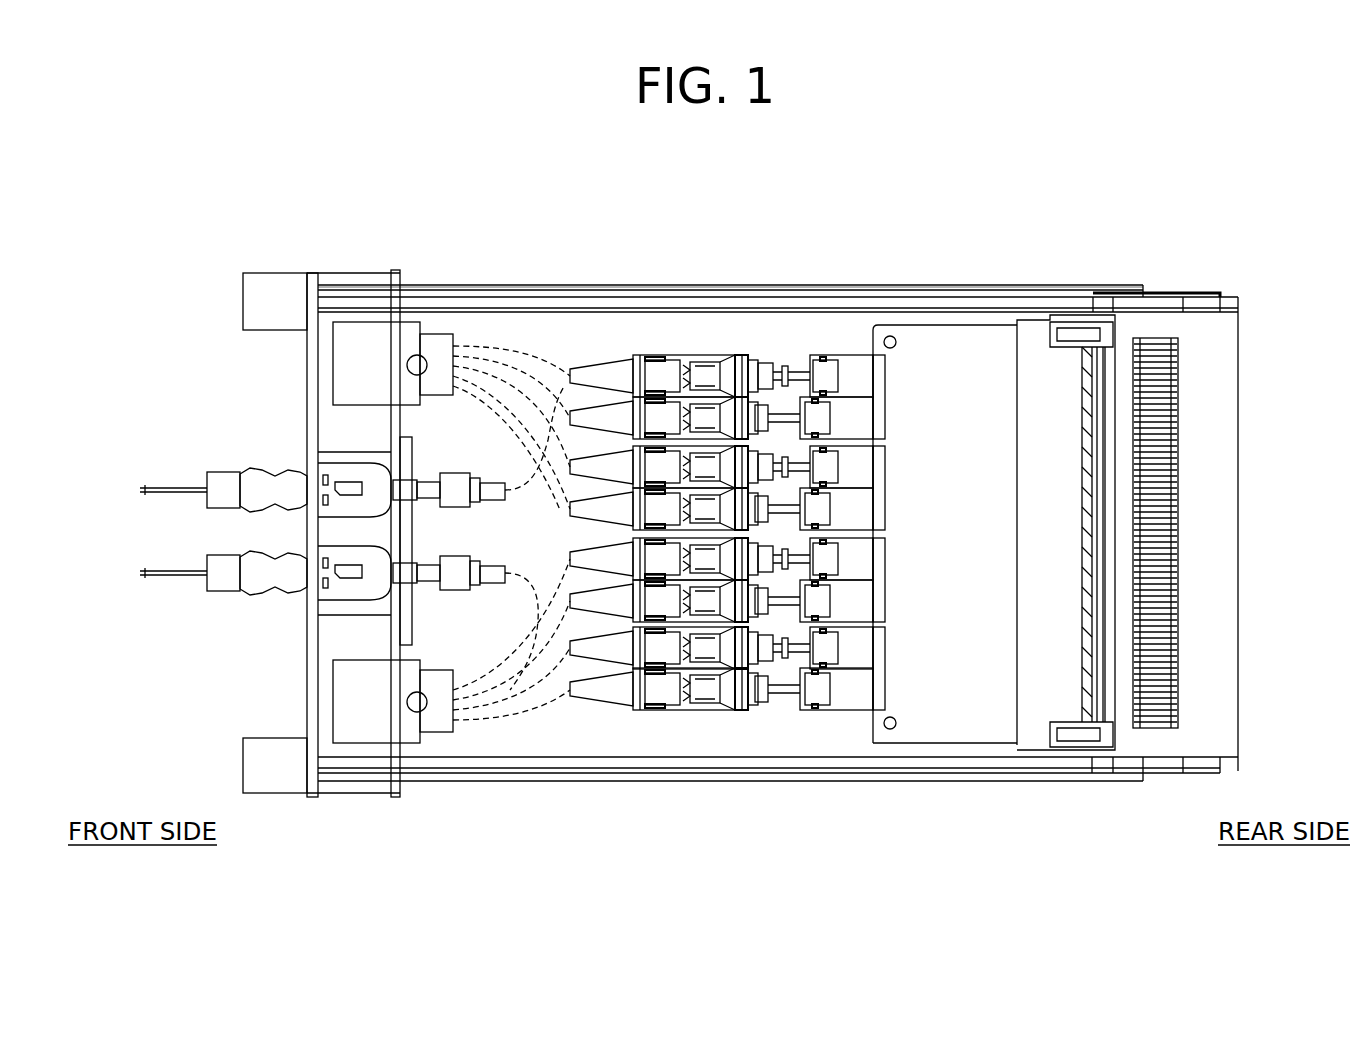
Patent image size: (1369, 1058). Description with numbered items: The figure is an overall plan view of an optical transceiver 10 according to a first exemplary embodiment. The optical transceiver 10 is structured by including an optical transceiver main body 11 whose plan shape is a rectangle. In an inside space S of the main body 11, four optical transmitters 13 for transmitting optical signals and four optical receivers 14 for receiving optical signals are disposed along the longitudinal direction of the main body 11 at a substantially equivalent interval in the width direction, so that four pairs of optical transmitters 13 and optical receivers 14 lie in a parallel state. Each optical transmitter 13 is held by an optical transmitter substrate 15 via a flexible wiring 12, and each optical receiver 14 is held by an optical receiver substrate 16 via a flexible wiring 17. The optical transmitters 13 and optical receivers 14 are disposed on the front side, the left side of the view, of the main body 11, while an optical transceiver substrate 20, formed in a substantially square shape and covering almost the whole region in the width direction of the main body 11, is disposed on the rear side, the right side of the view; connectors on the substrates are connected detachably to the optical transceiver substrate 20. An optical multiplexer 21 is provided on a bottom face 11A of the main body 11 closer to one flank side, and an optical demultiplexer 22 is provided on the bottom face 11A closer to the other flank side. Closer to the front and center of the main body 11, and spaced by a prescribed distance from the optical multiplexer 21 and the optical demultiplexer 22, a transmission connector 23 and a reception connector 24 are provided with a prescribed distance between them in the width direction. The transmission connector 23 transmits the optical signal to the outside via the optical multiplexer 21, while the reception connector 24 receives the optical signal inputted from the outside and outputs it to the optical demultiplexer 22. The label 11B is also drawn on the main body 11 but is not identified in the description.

The optical transceiver 10 is at (1133, 228).
The optical transceiver main body 11 is at (967, 285).
The bottom face 11A is at (512, 335).
The front panel 11B is at (307, 673).
The flexible wiring 12 is at (754, 357).
The optical transmitter 13 is at (618, 378).
The optical receiver 14 is at (885, 465).
The optical transmitter substrate 15 is at (843, 415).
The optical receiver substrate 16 is at (853, 370).
The flexible wiring 17 is at (793, 370).
The optical transceiver substrate 20 is at (975, 720).
The optical multiplexer 21 is at (366, 727).
The optical demultiplexer 22 is at (362, 346).
The transmission connector 23 is at (223, 582).
The reception connector 24 is at (222, 488).
The inside space S is at (648, 332).